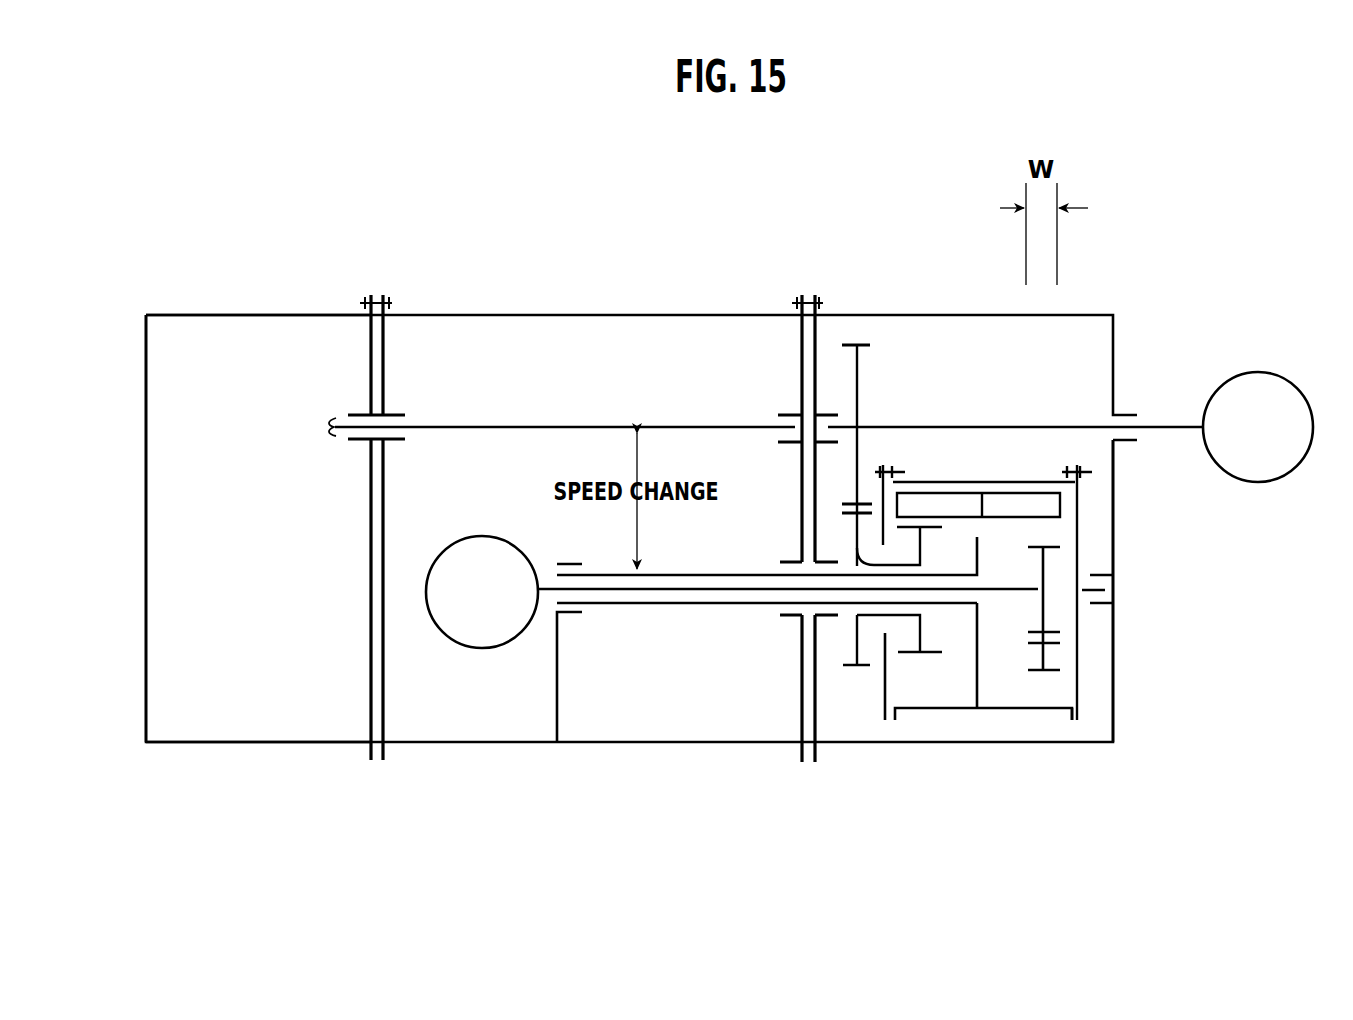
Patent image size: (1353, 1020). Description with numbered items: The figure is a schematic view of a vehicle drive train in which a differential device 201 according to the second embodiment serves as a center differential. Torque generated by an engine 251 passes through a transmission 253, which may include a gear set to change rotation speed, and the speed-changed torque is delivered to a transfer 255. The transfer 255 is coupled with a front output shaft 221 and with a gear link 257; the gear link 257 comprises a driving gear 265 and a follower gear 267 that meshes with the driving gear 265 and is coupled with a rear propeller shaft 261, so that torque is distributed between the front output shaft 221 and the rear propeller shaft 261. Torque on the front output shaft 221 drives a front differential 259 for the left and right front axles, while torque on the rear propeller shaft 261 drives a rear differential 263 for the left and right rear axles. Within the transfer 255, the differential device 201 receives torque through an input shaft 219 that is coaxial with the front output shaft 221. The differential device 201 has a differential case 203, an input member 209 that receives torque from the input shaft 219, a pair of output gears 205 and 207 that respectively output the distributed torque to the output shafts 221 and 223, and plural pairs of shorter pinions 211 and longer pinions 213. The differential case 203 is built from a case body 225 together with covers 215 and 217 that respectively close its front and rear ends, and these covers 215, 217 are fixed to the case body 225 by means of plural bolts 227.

The differential device 201 is at (1102, 815).
The differential case 203 is at (962, 722).
The output gear 205 is at (1055, 625).
The output gear 207 is at (912, 655).
The input member 209 is at (978, 622).
The shorter pinion 211 is at (1055, 670).
The longer pinion 213 is at (1040, 514).
The cover 215 is at (883, 715).
The cover 217 is at (1082, 713).
The input shaft 219 is at (650, 607).
The front output shaft 221 is at (750, 594).
The output shaft 223 is at (872, 560).
The case body 225 is at (1030, 711).
The bolt 227 is at (880, 472).
The engine 251 is at (220, 534).
The transmission 253 is at (450, 484).
The transfer 255 is at (1220, 770).
The gear link 257 is at (852, 300).
The front differential 259 is at (454, 607).
The rear propeller shaft 261 is at (1050, 426).
The rear differential 263 is at (1230, 438).
The driving gear 265 is at (848, 668).
The follower gear 267 is at (866, 350).